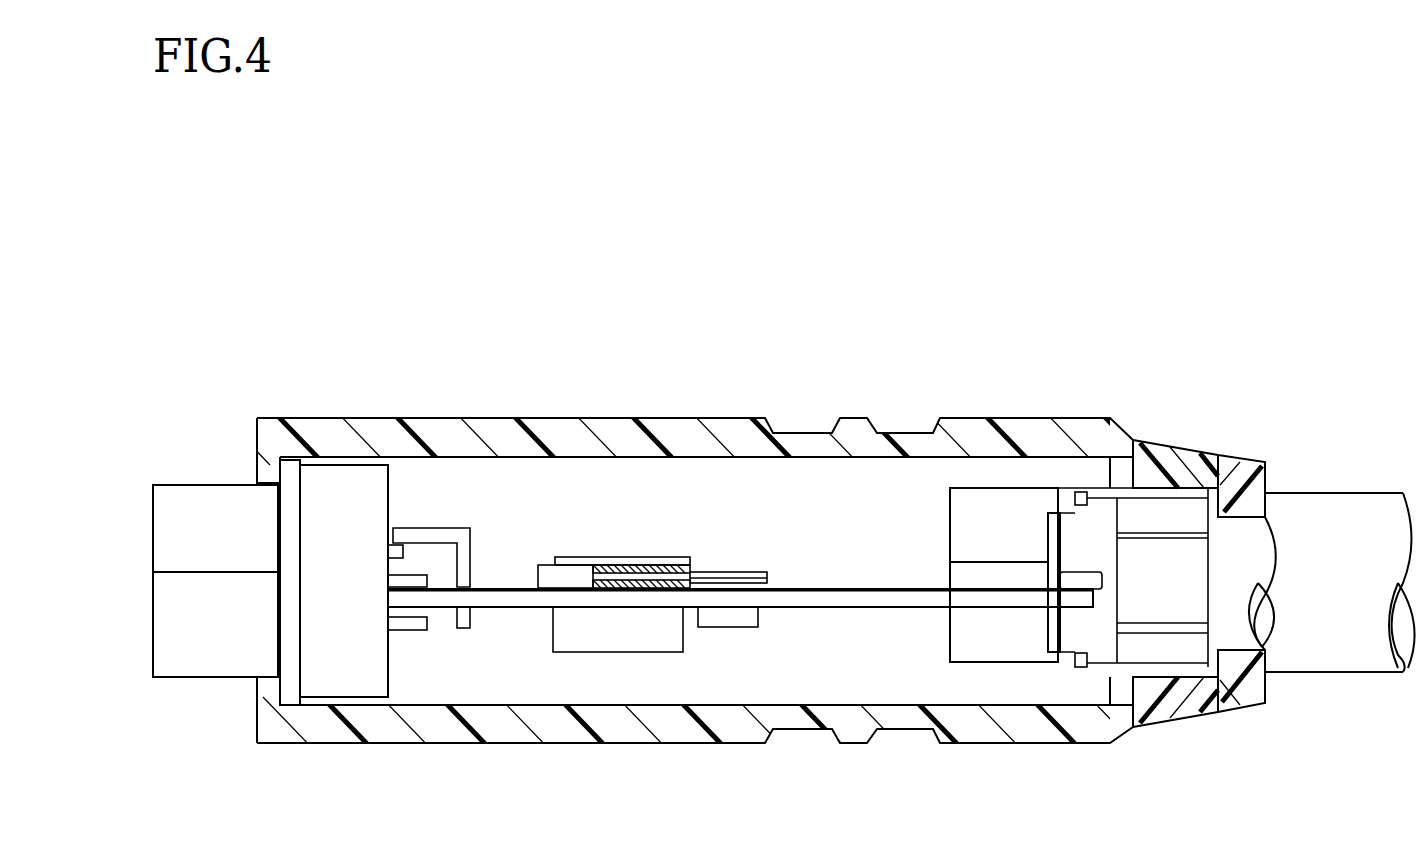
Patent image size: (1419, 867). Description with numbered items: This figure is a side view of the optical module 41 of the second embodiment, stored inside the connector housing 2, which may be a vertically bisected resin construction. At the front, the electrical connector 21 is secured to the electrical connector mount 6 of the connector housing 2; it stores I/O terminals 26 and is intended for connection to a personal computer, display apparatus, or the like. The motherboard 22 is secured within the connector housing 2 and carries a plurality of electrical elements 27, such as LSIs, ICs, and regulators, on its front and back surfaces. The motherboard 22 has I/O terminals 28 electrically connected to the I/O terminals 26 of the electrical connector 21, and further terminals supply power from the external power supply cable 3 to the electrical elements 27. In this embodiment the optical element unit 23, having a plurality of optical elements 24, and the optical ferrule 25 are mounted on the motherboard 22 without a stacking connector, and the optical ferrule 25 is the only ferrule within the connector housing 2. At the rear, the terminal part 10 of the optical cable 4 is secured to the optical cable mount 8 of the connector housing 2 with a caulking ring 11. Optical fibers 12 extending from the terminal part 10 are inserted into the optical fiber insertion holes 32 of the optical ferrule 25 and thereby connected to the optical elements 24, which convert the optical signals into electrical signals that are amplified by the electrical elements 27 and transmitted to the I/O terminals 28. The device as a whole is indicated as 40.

The connector housing 2 is at (330, 418).
The external power supply cable 3 is at (1347, 493).
The optical cable 4 is at (1262, 668).
The electrical connector mount 6 is at (283, 463).
The optical cable mount 8 is at (1237, 640).
The terminal part 10 is at (1002, 570).
The caulking ring 11 is at (1094, 653).
The optical fibers 12 is at (752, 570).
The electrical connector 21 is at (183, 485).
The motherboard 22 is at (820, 607).
The optical element unit 23 is at (595, 458).
The optical elements 24 is at (567, 583).
The optical ferrule 25 is at (612, 557).
The I/O terminals 26 is at (397, 559).
The electrical elements 27 is at (553, 558).
The I/O terminals 28 is at (433, 527).
The optical fiber insertion holes 32 is at (630, 557).
The sensor device 40 is at (913, 258).
The optical module 41 is at (725, 496).